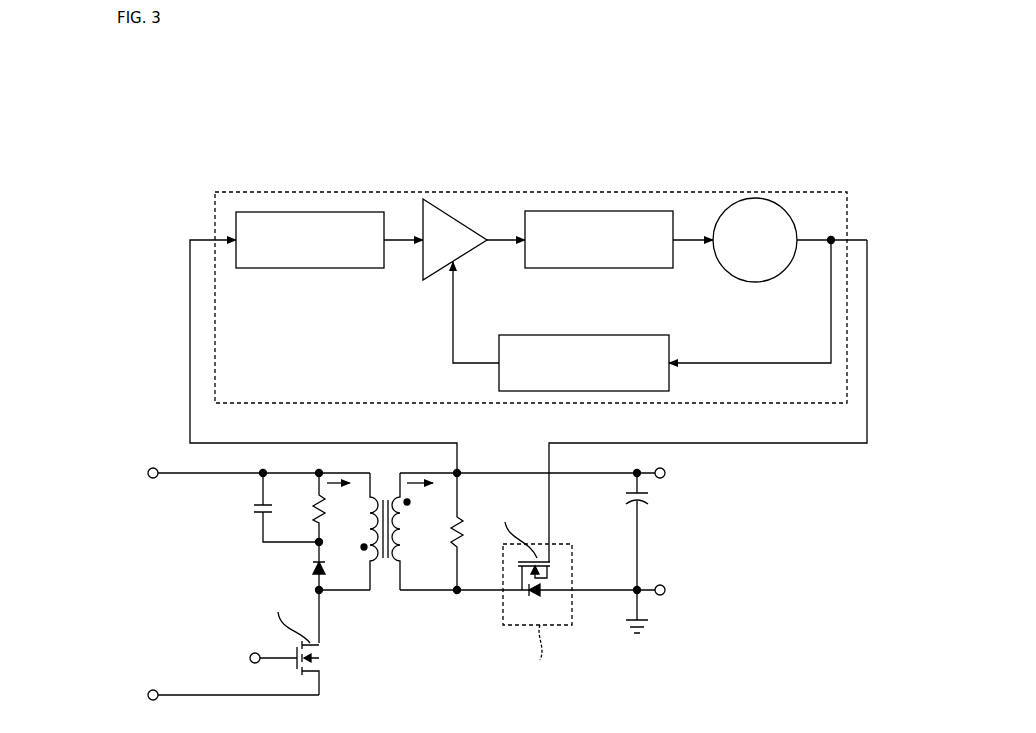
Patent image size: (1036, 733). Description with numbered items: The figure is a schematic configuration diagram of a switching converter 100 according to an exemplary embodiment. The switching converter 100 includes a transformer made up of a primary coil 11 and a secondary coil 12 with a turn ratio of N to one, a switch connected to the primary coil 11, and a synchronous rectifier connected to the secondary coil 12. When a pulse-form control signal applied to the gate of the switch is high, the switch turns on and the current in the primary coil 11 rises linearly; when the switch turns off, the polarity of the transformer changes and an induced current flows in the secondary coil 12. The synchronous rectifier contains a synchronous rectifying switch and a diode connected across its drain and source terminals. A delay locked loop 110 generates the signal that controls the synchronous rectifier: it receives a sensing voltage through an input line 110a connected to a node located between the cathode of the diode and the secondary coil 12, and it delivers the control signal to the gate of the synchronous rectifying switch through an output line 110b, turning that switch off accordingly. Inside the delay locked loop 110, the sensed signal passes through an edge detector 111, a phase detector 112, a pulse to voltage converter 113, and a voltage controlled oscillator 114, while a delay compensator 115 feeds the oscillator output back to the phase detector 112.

The switching converter 100 is at (142, 120).
The delay locked loop 110 is at (538, 192).
The input line 110a is at (190, 345).
The output line 110b is at (867, 341).
The edge detector 111 is at (308, 268).
The phase detector 112 is at (460, 257).
The pulse to voltage converter 113 is at (597, 268).
The voltage controlled oscillator 114 is at (752, 282).
The delay compensator 115 is at (499, 381).
The primary coil 11 is at (375, 565).
The secondary coil 12 is at (395, 565).